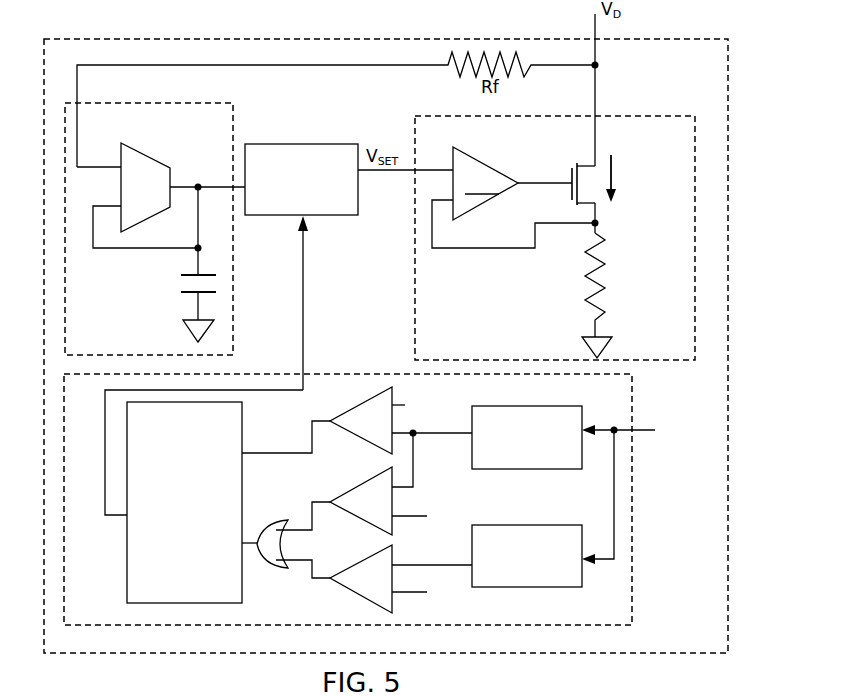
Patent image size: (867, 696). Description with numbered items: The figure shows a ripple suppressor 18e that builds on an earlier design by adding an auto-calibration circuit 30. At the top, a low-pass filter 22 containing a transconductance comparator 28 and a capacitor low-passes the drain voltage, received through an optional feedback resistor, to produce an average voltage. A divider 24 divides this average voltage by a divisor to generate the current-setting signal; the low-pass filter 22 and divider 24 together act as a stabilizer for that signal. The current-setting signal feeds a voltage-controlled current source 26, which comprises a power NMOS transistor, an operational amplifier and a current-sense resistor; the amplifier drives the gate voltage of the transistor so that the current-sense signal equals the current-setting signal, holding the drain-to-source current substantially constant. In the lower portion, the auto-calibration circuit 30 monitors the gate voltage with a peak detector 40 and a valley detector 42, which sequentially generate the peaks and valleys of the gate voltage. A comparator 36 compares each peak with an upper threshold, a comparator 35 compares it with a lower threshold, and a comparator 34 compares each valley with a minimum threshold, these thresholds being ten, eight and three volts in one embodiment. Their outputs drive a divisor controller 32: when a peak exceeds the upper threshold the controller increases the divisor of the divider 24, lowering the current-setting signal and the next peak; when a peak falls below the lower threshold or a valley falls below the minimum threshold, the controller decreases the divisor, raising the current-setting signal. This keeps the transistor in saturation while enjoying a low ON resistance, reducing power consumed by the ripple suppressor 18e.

The ripple suppressor 18e is at (716, 71).
The low-pass filter 22 is at (210, 130).
The divider 24 is at (311, 202).
The voltage-controlled current source 26 is at (675, 154).
The transconductance comparator 28 is at (150, 226).
The auto-calibration circuit 30 is at (618, 399).
The divisor controller 32 is at (180, 540).
The comparator 34 is at (377, 587).
The comparator 35 is at (377, 510).
The comparator 36 is at (377, 428).
The peak detector 40 is at (567, 431).
The valley detector 42 is at (572, 548).